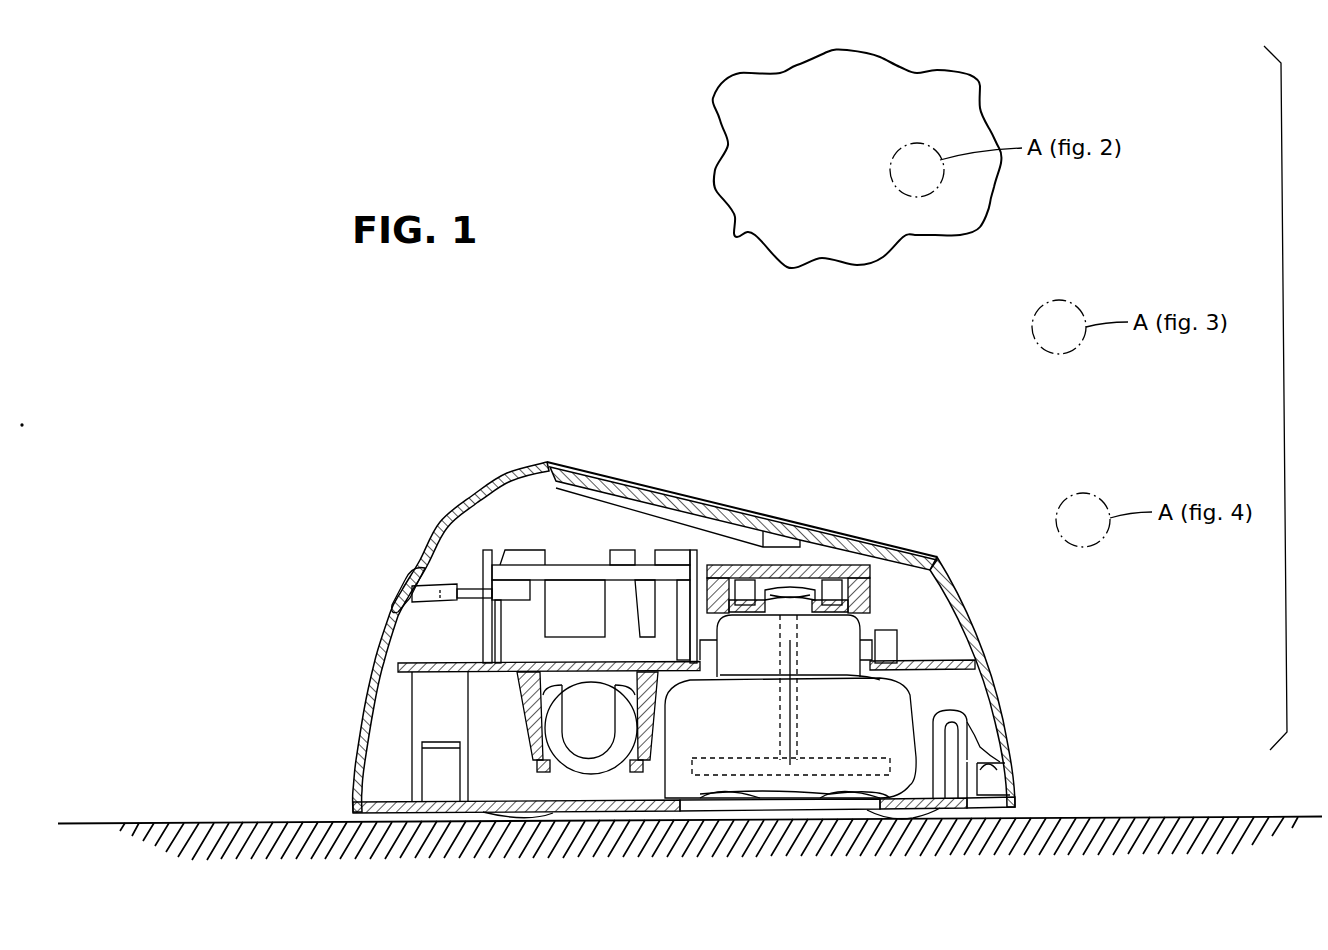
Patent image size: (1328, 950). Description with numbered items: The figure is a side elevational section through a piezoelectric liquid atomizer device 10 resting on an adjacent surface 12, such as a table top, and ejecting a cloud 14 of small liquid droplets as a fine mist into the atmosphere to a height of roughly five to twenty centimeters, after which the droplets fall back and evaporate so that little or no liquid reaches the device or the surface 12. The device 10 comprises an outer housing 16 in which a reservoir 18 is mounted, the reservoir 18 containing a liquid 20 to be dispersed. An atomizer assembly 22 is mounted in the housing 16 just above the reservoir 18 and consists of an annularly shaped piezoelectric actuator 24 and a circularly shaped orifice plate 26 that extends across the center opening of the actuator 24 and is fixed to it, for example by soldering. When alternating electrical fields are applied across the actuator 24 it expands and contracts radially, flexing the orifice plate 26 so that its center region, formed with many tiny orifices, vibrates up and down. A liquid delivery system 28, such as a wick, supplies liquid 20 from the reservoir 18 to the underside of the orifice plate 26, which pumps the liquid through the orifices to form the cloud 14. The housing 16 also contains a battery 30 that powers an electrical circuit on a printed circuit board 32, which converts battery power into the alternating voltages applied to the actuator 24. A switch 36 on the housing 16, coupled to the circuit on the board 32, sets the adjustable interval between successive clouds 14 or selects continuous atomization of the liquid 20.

The piezoelectric liquid atomizer device 10 is at (705, 631).
The adjacent surface 12 is at (277, 828).
The cloud 14 is at (718, 146).
The outer housing 16 is at (995, 672).
The reservoir 18 is at (905, 700).
The liquid 20 is at (790, 706).
The atomizer assembly 22 is at (788, 553).
The piezoelectric actuator 24 is at (796, 586).
The orifice plate 26 is at (775, 603).
The liquid delivery system 28 is at (795, 656).
The battery 30 is at (592, 775).
The printed circuit board 32 is at (573, 572).
The switch 36 is at (410, 582).